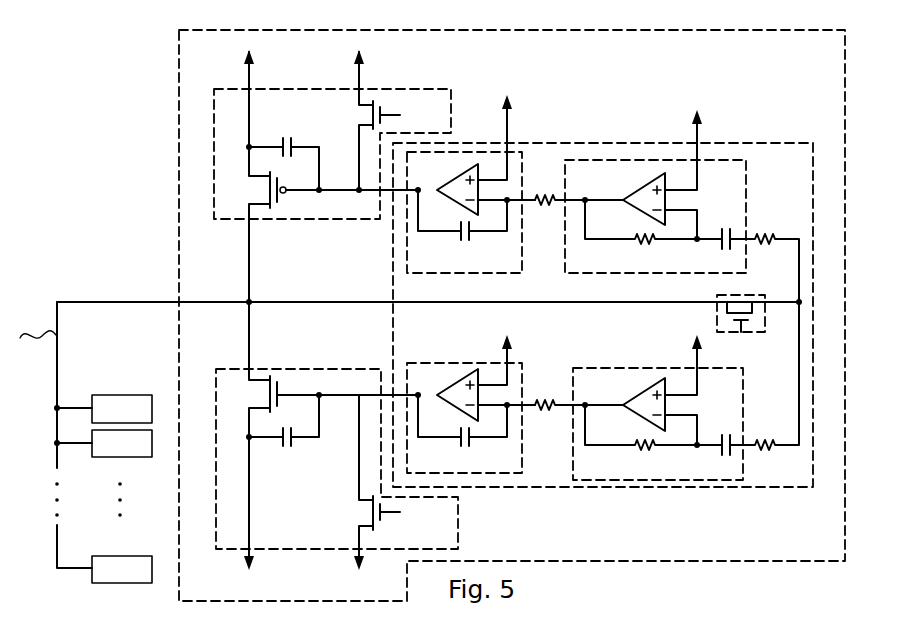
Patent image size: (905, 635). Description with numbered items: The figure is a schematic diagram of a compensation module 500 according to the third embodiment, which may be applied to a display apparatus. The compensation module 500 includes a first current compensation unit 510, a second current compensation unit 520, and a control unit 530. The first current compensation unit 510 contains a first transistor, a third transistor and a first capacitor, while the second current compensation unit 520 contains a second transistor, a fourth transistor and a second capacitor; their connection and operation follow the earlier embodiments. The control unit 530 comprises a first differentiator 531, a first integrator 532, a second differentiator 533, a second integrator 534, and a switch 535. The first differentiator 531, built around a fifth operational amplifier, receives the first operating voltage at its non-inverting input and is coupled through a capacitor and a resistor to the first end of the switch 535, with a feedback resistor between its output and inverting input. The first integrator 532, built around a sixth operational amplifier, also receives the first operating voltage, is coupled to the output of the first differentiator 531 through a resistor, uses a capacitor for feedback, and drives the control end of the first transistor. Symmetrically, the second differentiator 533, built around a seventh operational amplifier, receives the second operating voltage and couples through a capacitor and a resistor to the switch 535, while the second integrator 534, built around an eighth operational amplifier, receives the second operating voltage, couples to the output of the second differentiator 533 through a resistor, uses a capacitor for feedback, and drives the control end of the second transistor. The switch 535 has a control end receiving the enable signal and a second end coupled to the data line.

The compensation module 500 is at (158, 144).
The first current compensation unit 510 is at (284, 221).
The second current compensation unit 520 is at (288, 369).
The control unit 530 is at (393, 264).
The first differentiator 531 is at (717, 161).
The first integrator 532 is at (522, 165).
The second differentiator 533 is at (660, 481).
The second integrator 534 is at (497, 475).
The switch 535 is at (755, 333).